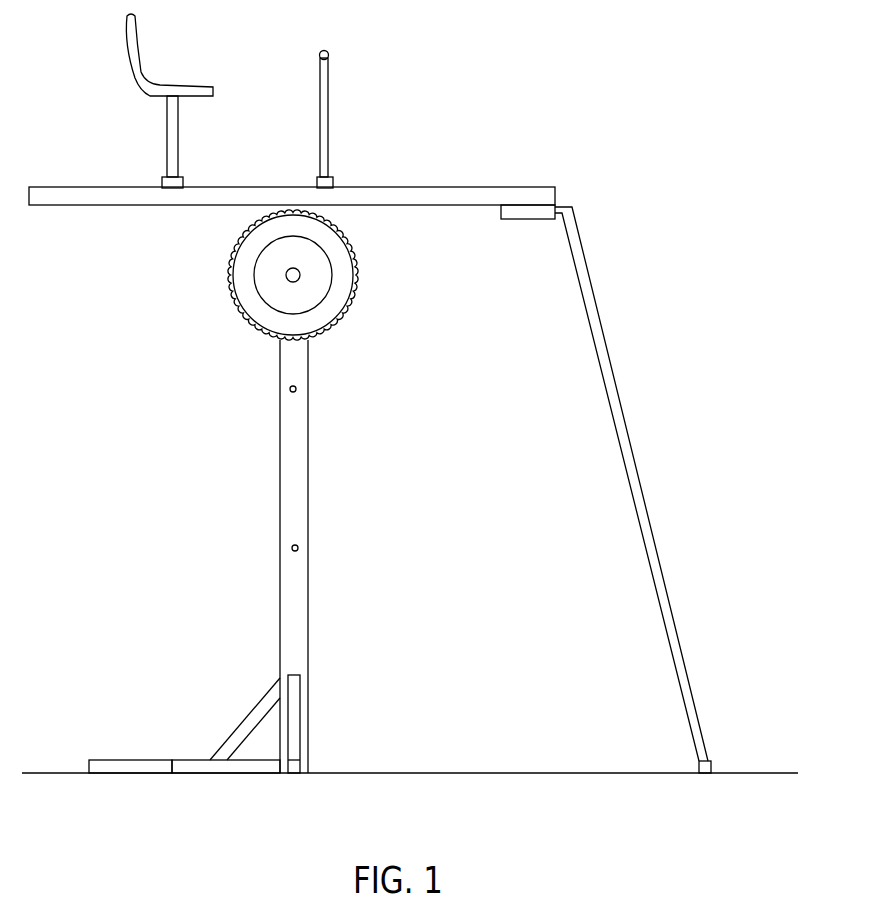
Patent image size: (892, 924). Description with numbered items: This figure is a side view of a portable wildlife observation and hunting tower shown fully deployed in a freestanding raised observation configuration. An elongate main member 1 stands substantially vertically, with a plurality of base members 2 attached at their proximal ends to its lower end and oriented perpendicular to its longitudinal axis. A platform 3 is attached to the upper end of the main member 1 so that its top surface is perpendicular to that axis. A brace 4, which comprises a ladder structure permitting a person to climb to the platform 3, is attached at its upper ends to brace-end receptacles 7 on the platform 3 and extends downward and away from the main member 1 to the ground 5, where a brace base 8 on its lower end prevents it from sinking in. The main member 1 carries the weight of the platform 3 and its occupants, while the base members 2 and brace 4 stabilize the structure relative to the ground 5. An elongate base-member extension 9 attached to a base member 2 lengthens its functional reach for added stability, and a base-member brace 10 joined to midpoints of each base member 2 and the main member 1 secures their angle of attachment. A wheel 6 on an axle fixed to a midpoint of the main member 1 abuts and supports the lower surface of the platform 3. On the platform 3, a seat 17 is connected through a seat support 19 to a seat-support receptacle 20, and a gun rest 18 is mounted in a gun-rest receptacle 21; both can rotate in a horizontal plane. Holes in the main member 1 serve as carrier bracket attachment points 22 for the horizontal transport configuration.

The main member 1 is at (308, 467).
The base members 2 is at (233, 766).
The platform 3 is at (463, 207).
The brace 4 is at (643, 487).
The ground 5 is at (520, 772).
The wheel 6 is at (363, 280).
The brace-end receptacles 7 is at (537, 219).
The brace base 8 is at (712, 764).
The base-member extension 9 is at (110, 760).
The base-member brace 10 is at (246, 716).
The seat 17 is at (138, 33).
The gun rest 18 is at (329, 54).
The seat support 19 is at (178, 128).
The seat-support receptacle 20 is at (183, 178).
The gun-rest receptacle 21 is at (333, 178).
The carrier bracket attachment points 22 is at (296, 390).